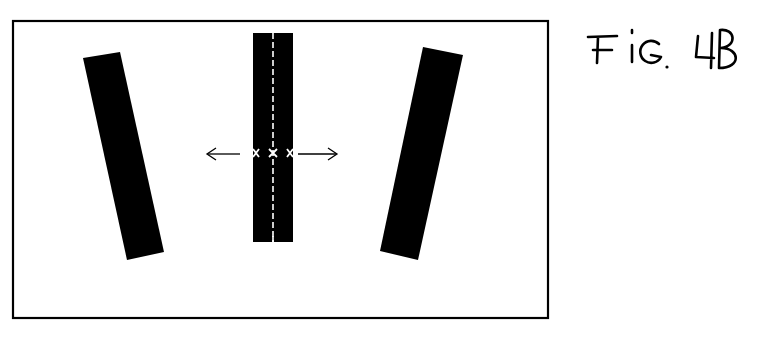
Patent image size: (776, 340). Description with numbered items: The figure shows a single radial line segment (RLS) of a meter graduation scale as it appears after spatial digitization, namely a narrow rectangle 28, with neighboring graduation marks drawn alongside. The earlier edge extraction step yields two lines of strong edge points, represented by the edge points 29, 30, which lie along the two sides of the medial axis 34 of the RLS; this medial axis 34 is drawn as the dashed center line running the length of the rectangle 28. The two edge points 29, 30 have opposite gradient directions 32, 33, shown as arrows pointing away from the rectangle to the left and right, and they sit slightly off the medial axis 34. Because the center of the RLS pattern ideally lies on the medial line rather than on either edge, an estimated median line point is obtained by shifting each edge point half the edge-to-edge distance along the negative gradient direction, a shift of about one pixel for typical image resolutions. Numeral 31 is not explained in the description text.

The narrow rectangle 28 is at (299, 79).
The edge point 29 is at (243, 140).
The edge point 30 is at (302, 140).
The center line 31 is at (252, 175).
The gradient direction 32 is at (211, 153).
The gradient direction 33 is at (330, 158).
The medial axis 34 is at (282, 246).